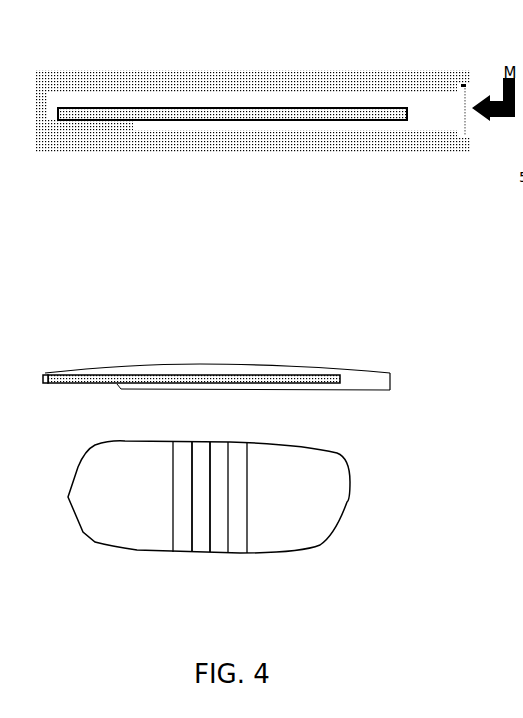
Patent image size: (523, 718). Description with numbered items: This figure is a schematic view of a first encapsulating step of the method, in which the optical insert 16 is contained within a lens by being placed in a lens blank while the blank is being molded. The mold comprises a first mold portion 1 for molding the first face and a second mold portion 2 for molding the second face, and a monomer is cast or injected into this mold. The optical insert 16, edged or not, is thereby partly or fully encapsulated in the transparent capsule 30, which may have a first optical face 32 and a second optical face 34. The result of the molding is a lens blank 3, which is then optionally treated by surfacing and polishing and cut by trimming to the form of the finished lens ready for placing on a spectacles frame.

The first mold portion 1 is at (220, 82).
The second mold portion 2 is at (213, 143).
The lens blank 3 is at (367, 493).
The optical insert 16 is at (392, 113).
The transparent capsule 30 is at (417, 113).
The first optical face 32 is at (352, 102).
The second optical face 34 is at (338, 127).